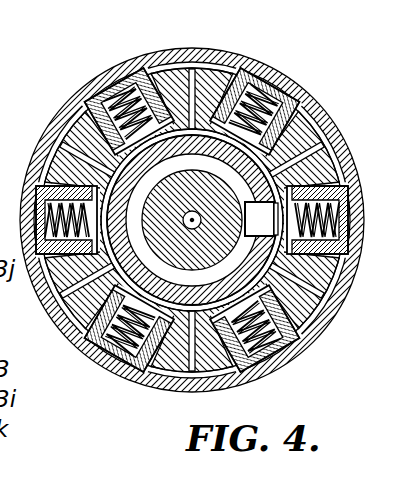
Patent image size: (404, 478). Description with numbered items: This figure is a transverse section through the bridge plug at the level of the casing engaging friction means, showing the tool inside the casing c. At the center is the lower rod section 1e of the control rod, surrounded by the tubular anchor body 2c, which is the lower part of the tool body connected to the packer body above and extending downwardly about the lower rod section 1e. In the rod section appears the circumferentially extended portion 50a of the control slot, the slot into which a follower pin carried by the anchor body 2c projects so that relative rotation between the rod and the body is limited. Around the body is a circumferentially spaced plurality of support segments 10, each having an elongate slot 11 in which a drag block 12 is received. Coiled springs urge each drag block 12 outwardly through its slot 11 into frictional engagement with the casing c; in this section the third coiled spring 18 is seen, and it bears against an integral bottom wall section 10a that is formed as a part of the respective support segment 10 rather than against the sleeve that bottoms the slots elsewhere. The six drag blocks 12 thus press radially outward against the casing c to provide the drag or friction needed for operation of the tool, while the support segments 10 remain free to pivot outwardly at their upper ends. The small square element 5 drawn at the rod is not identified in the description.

The casing c is at (317, 328).
The support segment 10 is at (82, 135).
The integral bottom wall section 10a is at (268, 143).
The elongate slot 11 is at (225, 78).
The drag block 12 is at (269, 85).
The third coiled spring 18 is at (120, 110).
The circumferentially extended portion of control slot 50a is at (188, 280).
The permanent magnet insert 5 is at (245, 227).
The lower rod section 1e is at (53, 280).
The anchor body 2c is at (314, 302).